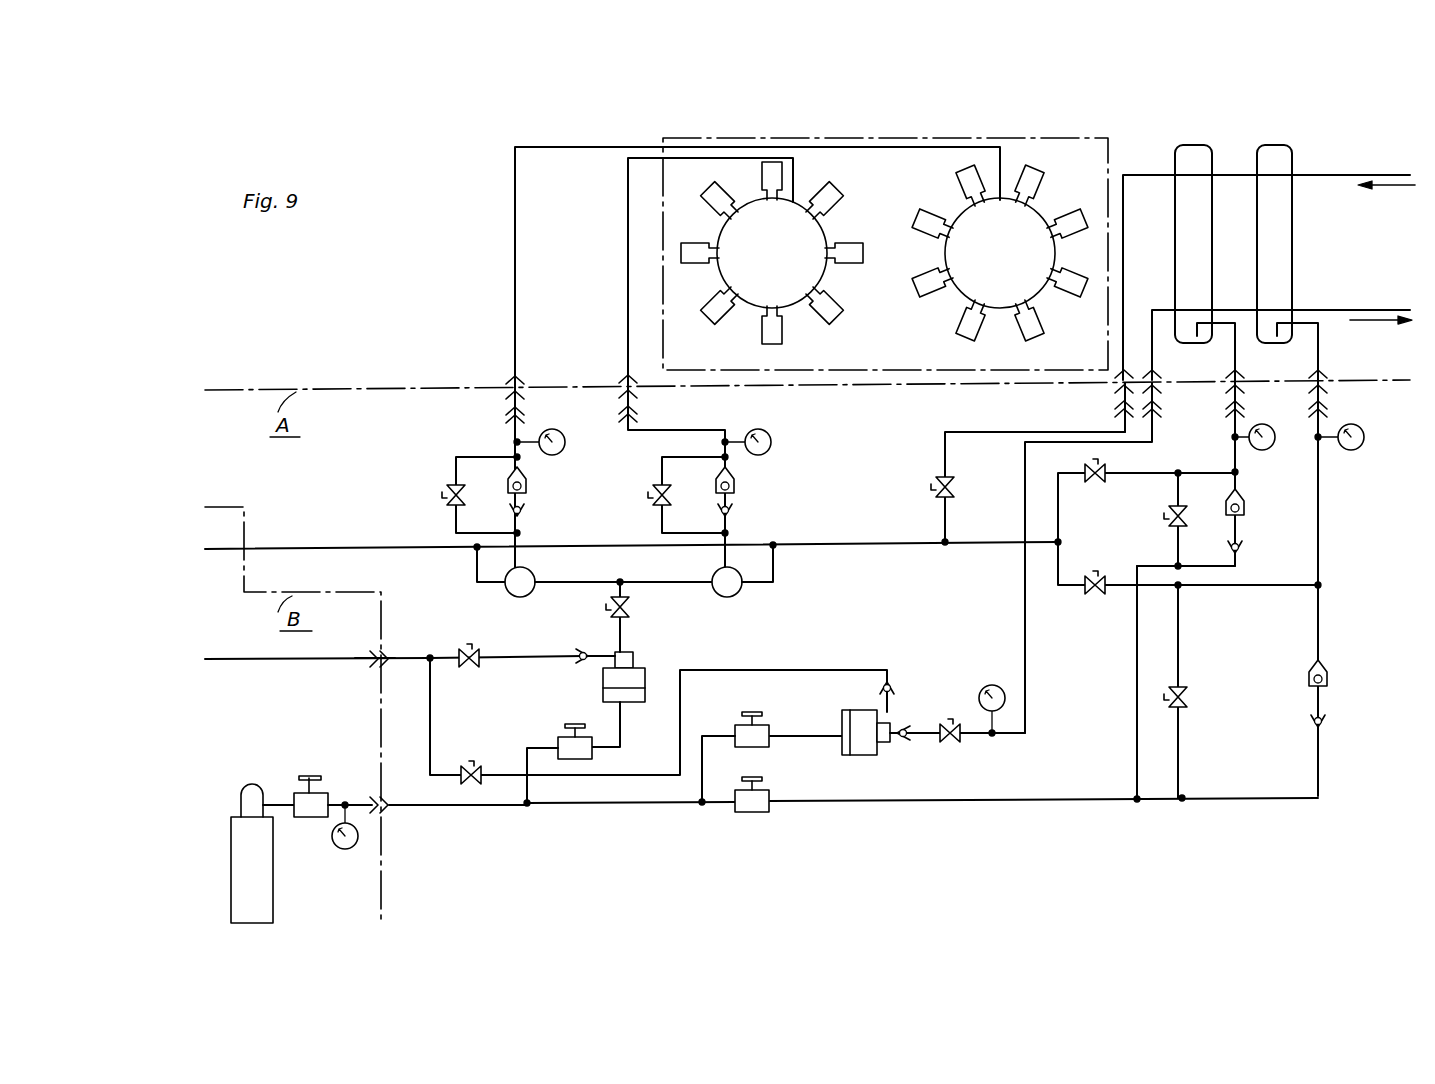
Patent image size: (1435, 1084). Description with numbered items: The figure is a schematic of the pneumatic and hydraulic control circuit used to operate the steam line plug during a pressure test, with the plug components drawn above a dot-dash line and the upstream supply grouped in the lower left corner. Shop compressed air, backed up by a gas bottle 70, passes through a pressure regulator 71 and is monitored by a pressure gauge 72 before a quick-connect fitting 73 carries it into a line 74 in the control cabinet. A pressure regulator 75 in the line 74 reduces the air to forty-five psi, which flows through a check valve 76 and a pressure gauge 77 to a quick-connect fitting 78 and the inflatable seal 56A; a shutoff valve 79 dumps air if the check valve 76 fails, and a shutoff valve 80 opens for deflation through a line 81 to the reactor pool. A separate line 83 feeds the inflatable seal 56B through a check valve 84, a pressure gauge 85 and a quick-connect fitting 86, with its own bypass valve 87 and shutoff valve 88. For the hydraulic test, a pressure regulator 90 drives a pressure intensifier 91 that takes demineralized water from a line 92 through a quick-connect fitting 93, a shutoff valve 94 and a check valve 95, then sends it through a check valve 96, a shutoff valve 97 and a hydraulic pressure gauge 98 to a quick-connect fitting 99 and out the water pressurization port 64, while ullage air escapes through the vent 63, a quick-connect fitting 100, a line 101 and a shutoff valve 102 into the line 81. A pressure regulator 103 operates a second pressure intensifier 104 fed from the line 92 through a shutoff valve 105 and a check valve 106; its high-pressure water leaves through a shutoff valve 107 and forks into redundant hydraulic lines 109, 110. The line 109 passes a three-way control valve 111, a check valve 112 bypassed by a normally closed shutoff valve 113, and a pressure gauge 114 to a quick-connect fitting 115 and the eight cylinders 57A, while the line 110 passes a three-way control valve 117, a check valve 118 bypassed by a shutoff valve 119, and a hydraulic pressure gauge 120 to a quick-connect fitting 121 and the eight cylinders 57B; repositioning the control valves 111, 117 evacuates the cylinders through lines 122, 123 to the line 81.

The inflatable seal 56A is at (1293, 155).
The inflatable seal 56B is at (1176, 160).
The cylinders 57A is at (780, 176).
The hydraulic cylinders 57B is at (1044, 186).
The vent 63 is at (1376, 172).
The main steam line water pressurization port 64 is at (1366, 310).
The gas bottle 70 is at (274, 906).
The pressure regulator 71 is at (325, 786).
The pressure gauge 72 is at (342, 850).
The quick-connect fitting 73 is at (392, 814).
The line 74 is at (494, 812).
The pressure regulator 75 is at (750, 822).
The check valve 76 is at (1310, 700).
The pressure gauge 77 is at (1356, 452).
The quick-connect fitting 78 is at (1326, 398).
The shutoff valve 79 is at (1192, 690).
The shutoff valve 80 is at (1098, 598).
The line 81 is at (272, 546).
The line 83 is at (1134, 732).
The check valve 84 is at (1244, 524).
The pressure gauge 85 is at (1264, 452).
The quick-connect fitting 86 is at (1242, 398).
The bypass valve 87 is at (1166, 522).
The shutoff valve 88 is at (1100, 486).
The pressure regulator 90 is at (770, 724).
The pressure intensifier 91 is at (870, 758).
The line 92 is at (250, 666).
The quick-connect fitting 93 is at (372, 670).
The shutoff valve 94 is at (462, 766).
The check valve 95 is at (896, 680).
The check valve 96 is at (906, 722).
The shutoff valve 97 is at (950, 742).
The hydraulic pressure gauge 98 is at (996, 684).
The quick-connect fitting 99 is at (1158, 402).
The quick-connect fitting 100 is at (1118, 405).
The line 101 is at (990, 442).
The shutoff valve 102 is at (932, 480).
The pressure regulator 103 is at (594, 756).
The pressure intensifier 104 is at (648, 670).
The shutoff valve 105 is at (470, 672).
The check valve 106 is at (578, 666).
The shutoff valve 107 is at (630, 616).
The hydraulic line 109 is at (694, 588).
The hydraulic line 110 is at (572, 588).
The three-way control valve 111 is at (748, 598).
The check valve 112 is at (740, 494).
The shutoff valve 113 is at (654, 498).
The pressure gauge 114 is at (774, 448).
The quick-connect fitting 115 is at (620, 402).
The three-way control valve 117 is at (508, 596).
The check valve 118 is at (528, 494).
The shutoff valve 119 is at (442, 488).
The hydraulic pressure gauge 120 is at (566, 446).
The quick-connect fitting 121 is at (506, 404).
The line 122 is at (782, 570).
The line 123 is at (470, 550).